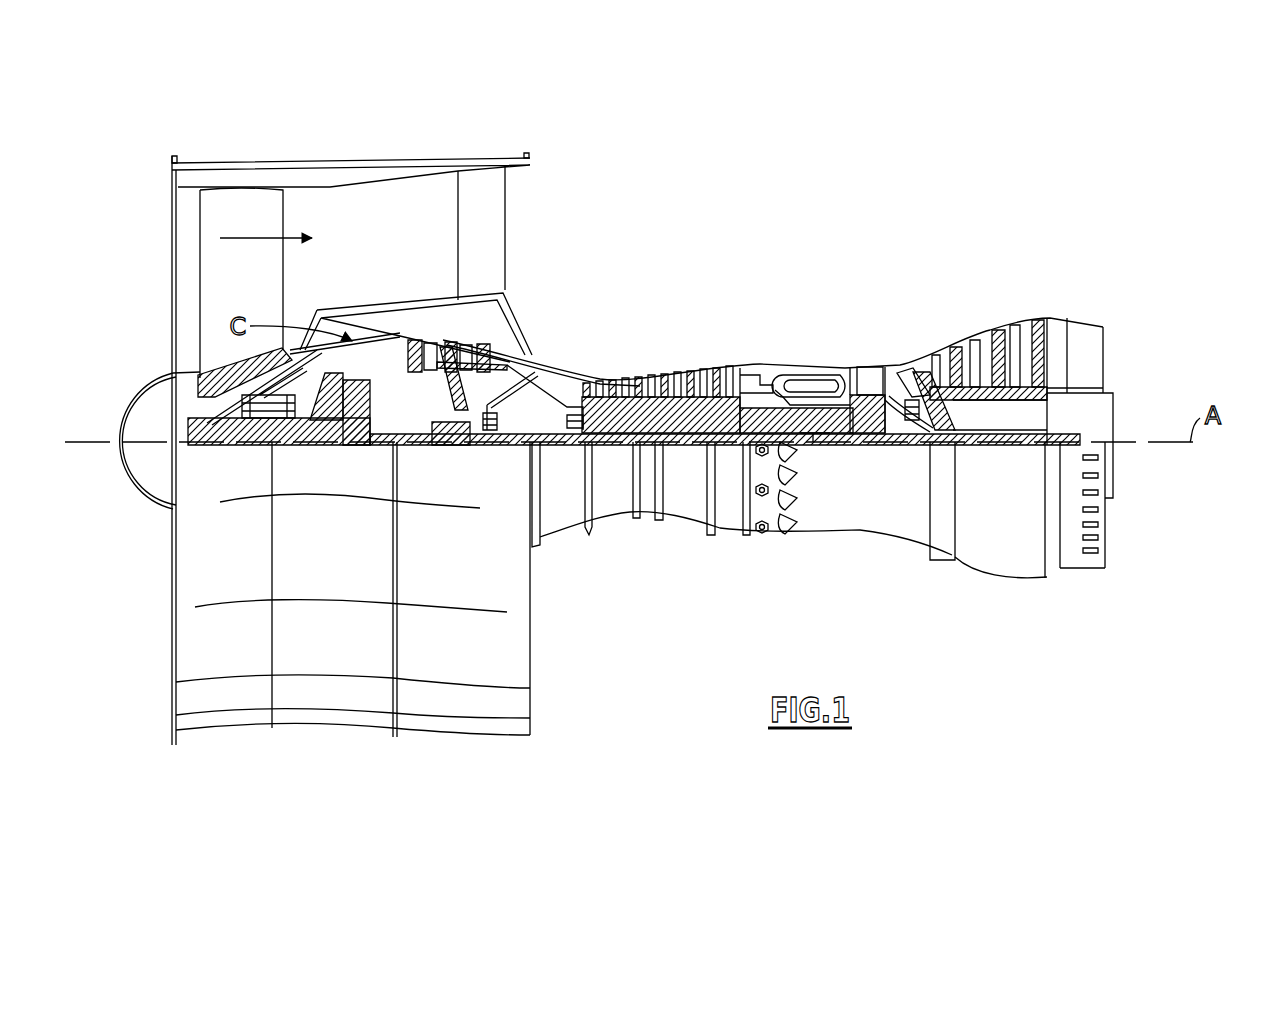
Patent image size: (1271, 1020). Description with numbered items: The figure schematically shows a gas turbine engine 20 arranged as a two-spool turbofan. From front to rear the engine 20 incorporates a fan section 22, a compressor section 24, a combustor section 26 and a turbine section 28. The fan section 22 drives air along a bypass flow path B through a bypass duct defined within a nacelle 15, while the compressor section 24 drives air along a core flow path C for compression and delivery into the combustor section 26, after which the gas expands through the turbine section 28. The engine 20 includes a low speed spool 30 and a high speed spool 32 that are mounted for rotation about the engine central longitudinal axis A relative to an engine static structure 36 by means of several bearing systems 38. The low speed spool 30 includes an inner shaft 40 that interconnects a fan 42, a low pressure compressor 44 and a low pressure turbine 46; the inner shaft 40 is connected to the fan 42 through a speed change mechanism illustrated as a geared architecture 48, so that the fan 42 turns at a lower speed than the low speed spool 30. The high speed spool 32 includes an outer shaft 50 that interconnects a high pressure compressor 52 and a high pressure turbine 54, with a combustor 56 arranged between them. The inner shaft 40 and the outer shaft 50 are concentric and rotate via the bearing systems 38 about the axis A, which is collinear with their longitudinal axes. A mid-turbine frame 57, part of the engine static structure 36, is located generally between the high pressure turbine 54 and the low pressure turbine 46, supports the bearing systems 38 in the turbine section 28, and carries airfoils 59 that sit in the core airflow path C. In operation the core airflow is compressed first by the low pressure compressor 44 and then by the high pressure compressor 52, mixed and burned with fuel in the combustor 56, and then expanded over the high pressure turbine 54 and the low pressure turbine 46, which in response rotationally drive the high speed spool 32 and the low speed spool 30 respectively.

The nacelle 15 is at (352, 165).
The gas turbine engine 20 is at (805, 210).
The fan section 22 is at (282, 152).
The compressor section 24 is at (717, 366).
The combustor section 26 is at (797, 345).
The turbine section 28 is at (981, 371).
The low speed spool 30 is at (687, 452).
The high speed spool 32 is at (733, 397).
The engine static structure 36 is at (728, 534).
The bearing systems 38 is at (493, 447).
The inner shaft 40 is at (545, 445).
The fan 42 is at (256, 292).
The low pressure compressor 44 is at (450, 357).
The low pressure turbine 46 is at (992, 340).
The geared architecture 48 is at (357, 430).
The outer shaft 50 is at (813, 437).
The high pressure compressor 52 is at (663, 410).
The high pressure turbine 54 is at (863, 367).
The combustor 56 is at (800, 387).
The mid-turbine frame 57 is at (910, 353).
The airfoils 59 is at (942, 413).